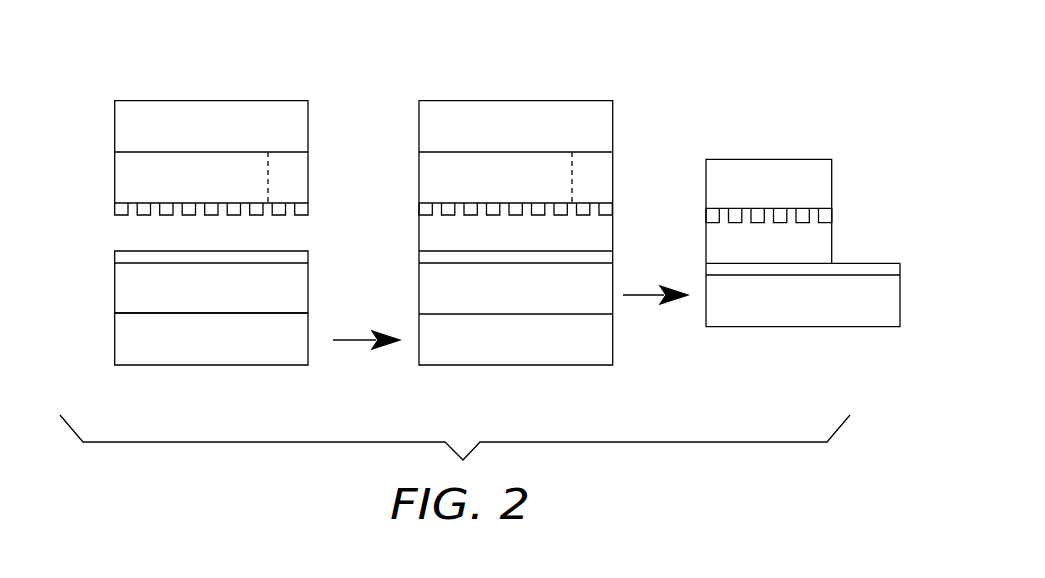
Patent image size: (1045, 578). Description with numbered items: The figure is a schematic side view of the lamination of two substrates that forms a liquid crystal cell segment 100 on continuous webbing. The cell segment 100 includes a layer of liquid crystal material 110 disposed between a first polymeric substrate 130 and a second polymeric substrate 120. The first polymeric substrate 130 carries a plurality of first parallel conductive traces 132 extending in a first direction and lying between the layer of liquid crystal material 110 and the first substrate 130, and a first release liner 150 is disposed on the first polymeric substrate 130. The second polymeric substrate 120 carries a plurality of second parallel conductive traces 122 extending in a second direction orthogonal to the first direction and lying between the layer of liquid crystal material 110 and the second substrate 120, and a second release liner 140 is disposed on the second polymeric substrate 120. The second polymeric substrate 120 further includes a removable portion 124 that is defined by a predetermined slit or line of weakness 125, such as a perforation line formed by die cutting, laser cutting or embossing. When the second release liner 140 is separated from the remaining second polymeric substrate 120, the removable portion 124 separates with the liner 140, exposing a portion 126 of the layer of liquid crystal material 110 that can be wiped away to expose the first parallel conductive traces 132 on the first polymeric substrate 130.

The liquid crystal cell segment 100 is at (548, 60).
The layer of liquid crystal material 110 is at (429, 235).
The second polymeric substrate 120 is at (474, 163).
The second parallel conductive traces 122 is at (145, 216).
The removable portion 124 is at (297, 186).
The predetermined slit or line of weakness 125 is at (269, 165).
The exposed portion of the layer of liquid crystal material 126 is at (871, 168).
The first polymeric substrate 130 is at (123, 294).
The first parallel conductive traces 132 is at (115, 257).
The second release liner 140 is at (140, 113).
The first release liner 150 is at (162, 350).